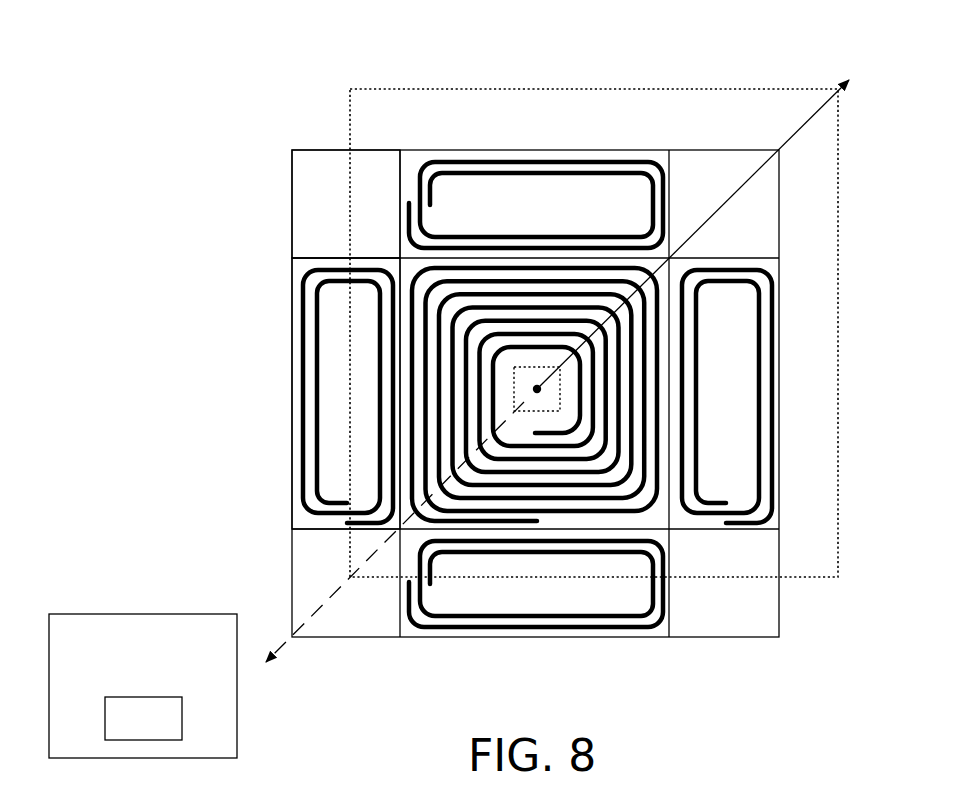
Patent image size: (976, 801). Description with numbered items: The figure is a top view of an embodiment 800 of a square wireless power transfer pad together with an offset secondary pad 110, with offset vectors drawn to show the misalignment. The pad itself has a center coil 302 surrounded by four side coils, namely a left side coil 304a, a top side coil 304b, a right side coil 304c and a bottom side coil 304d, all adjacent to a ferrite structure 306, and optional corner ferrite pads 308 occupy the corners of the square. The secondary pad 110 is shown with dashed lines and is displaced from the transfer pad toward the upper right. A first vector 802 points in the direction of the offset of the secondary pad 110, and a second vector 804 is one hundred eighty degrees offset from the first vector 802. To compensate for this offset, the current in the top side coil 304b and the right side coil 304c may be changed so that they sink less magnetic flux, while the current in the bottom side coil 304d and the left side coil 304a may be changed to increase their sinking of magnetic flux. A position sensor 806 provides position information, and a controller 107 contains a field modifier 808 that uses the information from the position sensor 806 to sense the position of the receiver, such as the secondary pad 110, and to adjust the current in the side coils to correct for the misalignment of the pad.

The embodiment 800 is at (255, 121).
The secondary pad 110 is at (731, 88).
The first vector 802 is at (802, 128).
The second vector 804 is at (316, 615).
The position sensor 806 is at (538, 412).
The center coil 302 is at (373, 553).
The left side coil 304a is at (301, 393).
The top side coil 304b is at (527, 161).
The right side coil 304c is at (773, 385).
The bottom side coil 304d is at (640, 630).
The ferrite structure 306 is at (291, 462).
The corner ferrite pads 308 is at (330, 216).
The controller 107 is at (122, 679).
The field modifier 808 is at (122, 731).